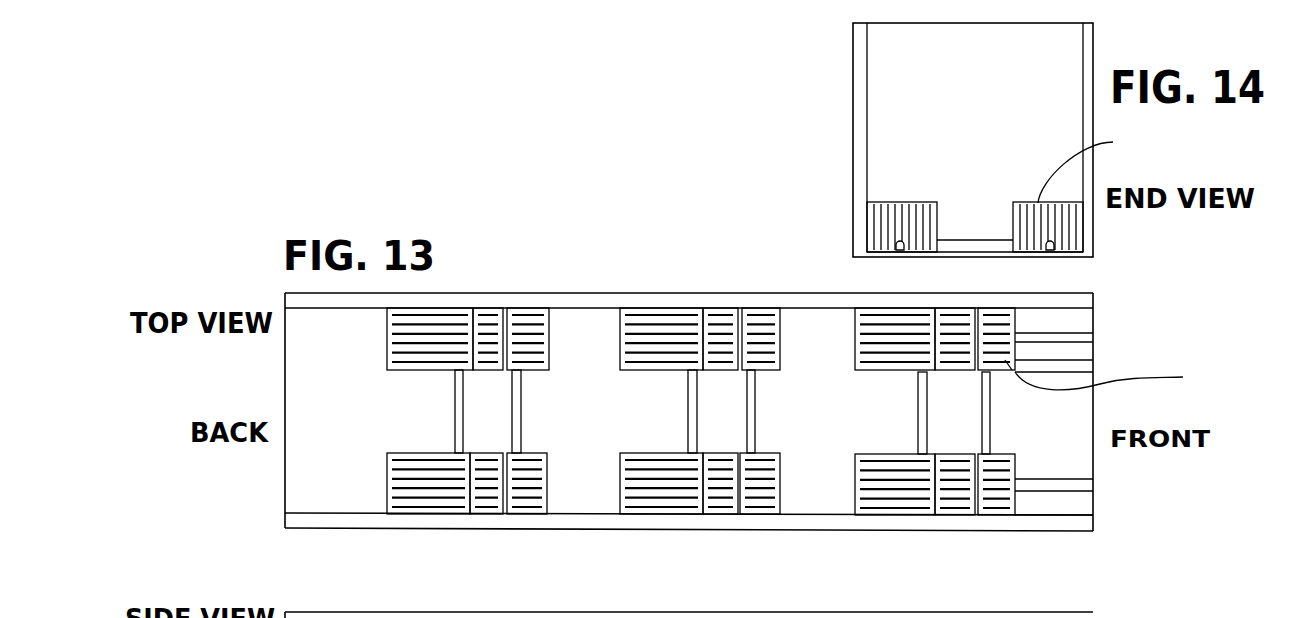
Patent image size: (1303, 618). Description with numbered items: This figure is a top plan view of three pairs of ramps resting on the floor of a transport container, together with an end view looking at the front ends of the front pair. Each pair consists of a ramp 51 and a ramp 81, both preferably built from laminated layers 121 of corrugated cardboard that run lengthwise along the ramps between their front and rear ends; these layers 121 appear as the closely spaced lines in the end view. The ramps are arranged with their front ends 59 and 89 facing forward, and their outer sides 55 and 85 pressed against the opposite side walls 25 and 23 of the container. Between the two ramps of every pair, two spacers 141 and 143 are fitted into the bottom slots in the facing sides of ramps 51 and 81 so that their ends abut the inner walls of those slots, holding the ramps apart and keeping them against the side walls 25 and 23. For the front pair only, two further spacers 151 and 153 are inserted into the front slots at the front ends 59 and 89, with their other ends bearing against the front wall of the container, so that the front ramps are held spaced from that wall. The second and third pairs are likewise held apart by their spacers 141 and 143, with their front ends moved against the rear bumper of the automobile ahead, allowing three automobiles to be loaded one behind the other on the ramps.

In FIG. 13, the side wall 23 is at (997, 533).
In FIG. 13, the side wall 25 is at (988, 296).
In FIG. 13, the ramp 51 is at (519, 307).
In FIG. 13, the side of ramp 55 is at (867, 310).
In FIG. 13, the front end of ramp 59 is at (1015, 366).
In FIG. 13, the ramp 81 is at (528, 513).
In FIG. 13, the side of ramp 85 is at (925, 515).
In FIG. 13, the front end of ramp 89 is at (1017, 477).
In FIG. 13, the laminated layers 121 is at (1123, 379).
In FIG. 14, the laminated layers 121 is at (1100, 167).
In FIG. 13, the spacer 141 is at (521, 415).
In FIG. 13, the spacer 143 is at (455, 405).
In FIG. 13, the spacer 151 is at (1072, 335).
In FIG. 13, the spacer 153 is at (1067, 493).